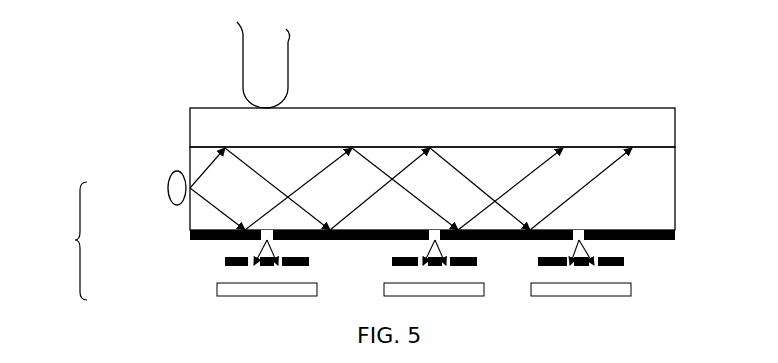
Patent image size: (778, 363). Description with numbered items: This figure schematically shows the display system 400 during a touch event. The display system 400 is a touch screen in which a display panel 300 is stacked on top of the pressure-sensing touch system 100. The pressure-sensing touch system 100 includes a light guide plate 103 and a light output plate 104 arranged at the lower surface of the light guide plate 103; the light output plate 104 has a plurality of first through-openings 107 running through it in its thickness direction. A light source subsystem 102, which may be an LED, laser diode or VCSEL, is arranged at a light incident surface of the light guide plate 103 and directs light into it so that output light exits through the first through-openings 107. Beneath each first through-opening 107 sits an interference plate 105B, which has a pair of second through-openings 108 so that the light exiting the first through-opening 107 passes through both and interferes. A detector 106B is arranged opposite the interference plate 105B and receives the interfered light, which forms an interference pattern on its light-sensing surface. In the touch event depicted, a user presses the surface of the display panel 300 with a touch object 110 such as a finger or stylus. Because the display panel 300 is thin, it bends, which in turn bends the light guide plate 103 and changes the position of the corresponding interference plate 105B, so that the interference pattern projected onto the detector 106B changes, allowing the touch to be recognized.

The display system 400 is at (58, 128).
The display panel 300 is at (187, 118).
The pressure-sensing touch system 100 is at (57, 241).
The light source subsystem 102 is at (168, 189).
The light guide plate 103 is at (190, 212).
The light output plate 104 is at (190, 237).
The interference plate 105B is at (225, 262).
The detector 106B is at (217, 289).
The first through-openings 107 is at (586, 229).
The second through-opening 108 is at (568, 268).
The touch object 110 is at (288, 53).